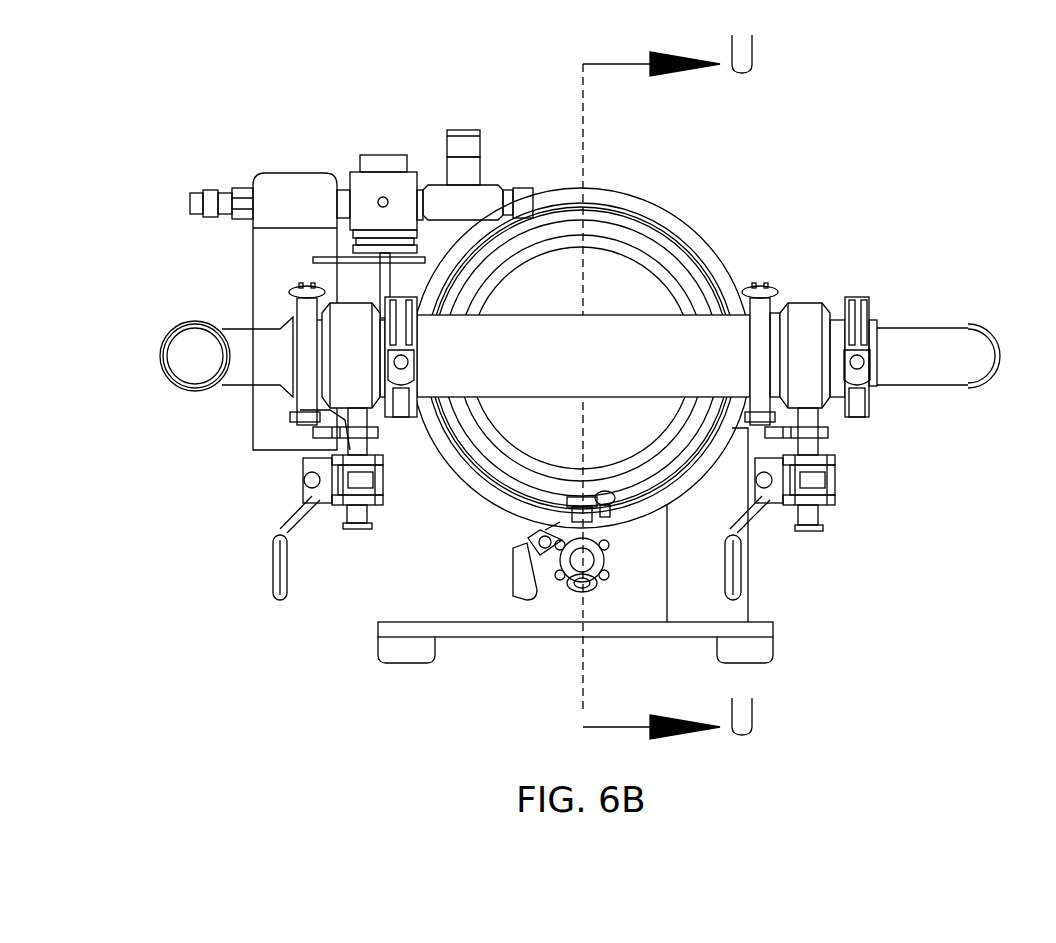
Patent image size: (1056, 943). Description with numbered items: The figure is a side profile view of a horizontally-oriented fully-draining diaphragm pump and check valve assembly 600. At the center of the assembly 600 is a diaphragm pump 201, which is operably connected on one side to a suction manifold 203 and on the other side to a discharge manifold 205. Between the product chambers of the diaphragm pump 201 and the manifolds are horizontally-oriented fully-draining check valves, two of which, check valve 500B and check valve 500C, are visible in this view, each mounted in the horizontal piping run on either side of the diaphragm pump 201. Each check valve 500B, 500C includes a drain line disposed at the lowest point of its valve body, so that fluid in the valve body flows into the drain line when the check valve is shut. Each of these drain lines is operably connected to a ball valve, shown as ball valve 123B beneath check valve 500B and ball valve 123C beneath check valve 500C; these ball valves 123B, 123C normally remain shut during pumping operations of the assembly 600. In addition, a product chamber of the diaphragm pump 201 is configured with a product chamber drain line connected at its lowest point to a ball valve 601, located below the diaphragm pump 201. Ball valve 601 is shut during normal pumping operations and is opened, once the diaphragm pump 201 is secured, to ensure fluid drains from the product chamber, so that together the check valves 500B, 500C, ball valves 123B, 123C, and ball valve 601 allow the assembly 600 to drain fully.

The horizontally-oriented fully-draining diaphragm pump and check valve assembly 600 is at (270, 78).
The diaphragm pump 201 is at (700, 217).
The discharge manifold 205 is at (190, 350).
The suction manifold 203 is at (985, 352).
The horizontally-oriented fully-draining check valve 500B is at (806, 300).
The horizontally-oriented fully-draining check valve 500C is at (384, 412).
The ball valve 123B is at (838, 488).
The ball valve 123C is at (343, 530).
The ball valve 601 is at (513, 565).